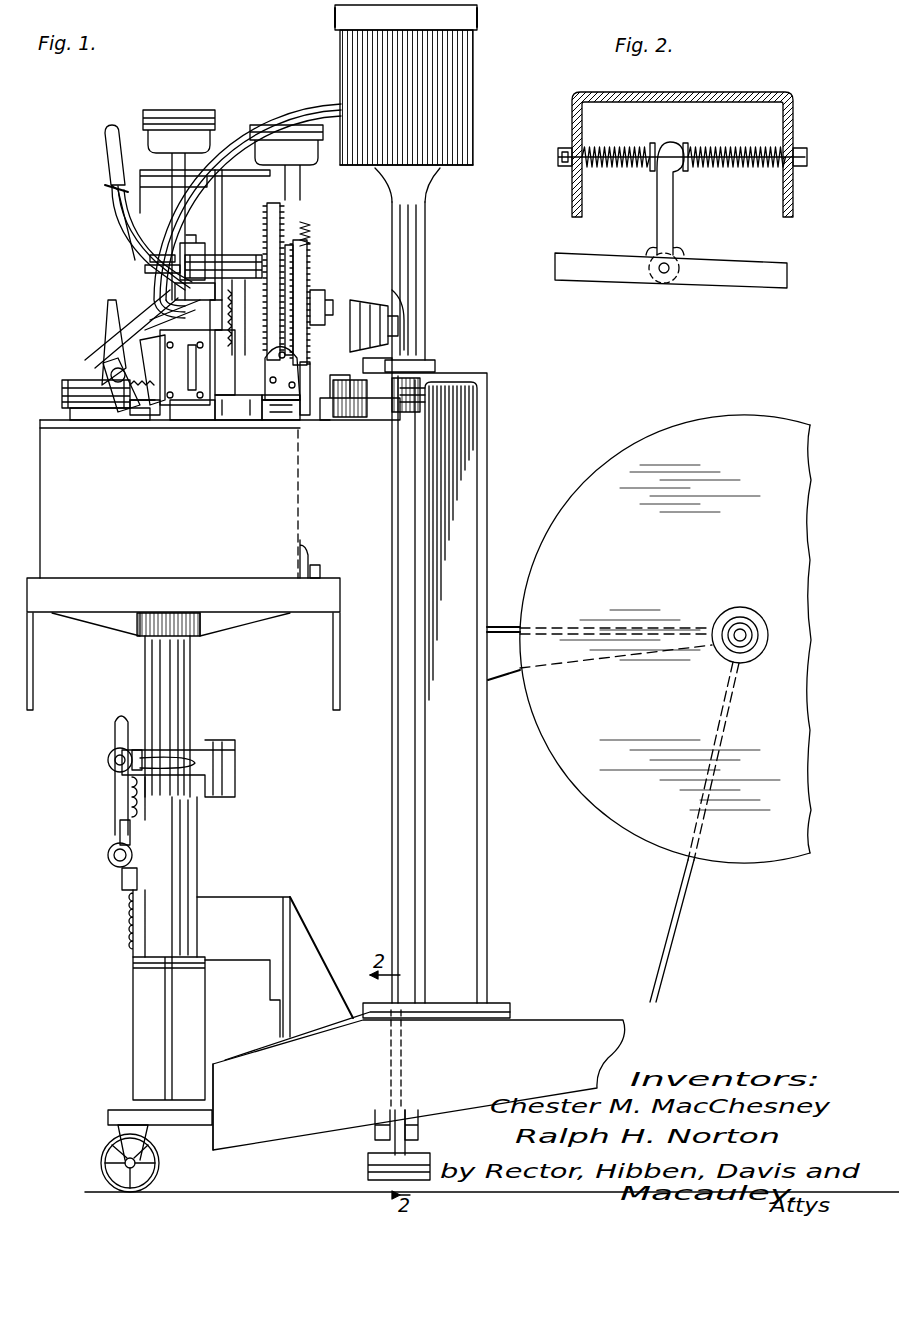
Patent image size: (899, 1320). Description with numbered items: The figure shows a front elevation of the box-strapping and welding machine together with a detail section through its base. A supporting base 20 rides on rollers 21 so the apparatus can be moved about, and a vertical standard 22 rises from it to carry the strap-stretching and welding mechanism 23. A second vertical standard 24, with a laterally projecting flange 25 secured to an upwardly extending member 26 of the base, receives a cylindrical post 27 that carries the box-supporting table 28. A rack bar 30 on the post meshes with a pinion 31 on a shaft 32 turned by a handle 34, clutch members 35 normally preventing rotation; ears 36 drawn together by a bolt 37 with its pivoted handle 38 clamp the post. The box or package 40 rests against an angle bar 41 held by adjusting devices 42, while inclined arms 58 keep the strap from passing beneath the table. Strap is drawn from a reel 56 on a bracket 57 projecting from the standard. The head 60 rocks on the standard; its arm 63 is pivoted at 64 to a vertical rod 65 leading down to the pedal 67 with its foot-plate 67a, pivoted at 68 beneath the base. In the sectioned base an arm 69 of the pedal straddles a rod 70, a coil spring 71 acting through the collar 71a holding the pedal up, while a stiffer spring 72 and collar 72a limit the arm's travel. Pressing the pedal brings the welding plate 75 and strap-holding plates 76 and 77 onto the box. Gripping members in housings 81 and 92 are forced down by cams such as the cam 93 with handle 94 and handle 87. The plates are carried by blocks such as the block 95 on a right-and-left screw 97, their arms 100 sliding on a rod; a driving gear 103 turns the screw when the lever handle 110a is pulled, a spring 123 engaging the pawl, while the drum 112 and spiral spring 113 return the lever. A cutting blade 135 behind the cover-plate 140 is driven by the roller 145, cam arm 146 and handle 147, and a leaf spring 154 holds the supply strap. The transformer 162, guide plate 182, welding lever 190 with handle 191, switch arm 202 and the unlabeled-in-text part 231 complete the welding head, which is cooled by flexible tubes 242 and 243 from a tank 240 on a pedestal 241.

In FIG. 1, the supporting base 20 is at (577, 1020).
In FIG. 2, the supporting base 20 is at (612, 94).
In FIG. 1, the rollers 21 is at (160, 1170).
In FIG. 1, the vertical standard 22 is at (488, 834).
In FIG. 1, the strap-stretching and welding mechanism 23 is at (99, 236).
In FIG. 1, the vertical standard 24 is at (200, 870).
In FIG. 1, the laterally projecting flange 25 is at (276, 897).
In FIG. 1, the upwardly extending member 26 is at (303, 937).
In FIG. 1, the cylindrical post 27 is at (191, 700).
In FIG. 1, the box-supporting table 28 is at (120, 600).
In FIG. 1, the rack bar 30 is at (132, 913).
In FIG. 1, the pinion 31 is at (107, 855).
In FIG. 1, the shaft 32 is at (114, 870).
In FIG. 1, the handle 34 is at (115, 800).
In FIG. 1, the clutch members 35 is at (120, 832).
In FIG. 1, the ears 36 is at (110, 760).
In FIG. 1, the bolt 37 is at (112, 765).
In FIG. 1, the pivoted handle 38 is at (190, 757).
In FIG. 1, the box or package 40 is at (302, 525).
In FIG. 1, the angle bar 41 is at (308, 545).
In FIG. 1, the adjusting devices 42 is at (320, 566).
In FIG. 1, the reel 56 is at (723, 416).
In FIG. 1, the bracket 57 is at (507, 650).
In FIG. 1, the inclined arms 58 is at (35, 692).
In FIG. 1, the head 60 is at (240, 282).
In FIG. 1, the arm 63 is at (392, 322).
In FIG. 1, the pivotal connection 64 is at (403, 347).
In FIG. 1, the vertical rod 65 is at (400, 448).
In FIG. 1, the pedal 67 is at (388, 1142).
In FIG. 2, the pedal 67 is at (722, 266).
In FIG. 1, the foot-plate 67a is at (368, 1168).
In FIG. 1, the pedal pivot 68 is at (420, 1123).
In FIG. 2, the arm 69 is at (657, 214).
In FIG. 2, the rod 70 is at (557, 153).
In FIG. 2, the coil spring 71 is at (747, 167).
In FIG. 2, the collar 71a is at (688, 142).
In FIG. 2, the spring 72 is at (620, 166).
In FIG. 2, the collar 72a is at (653, 143).
In FIG. 1, the welding plate 75 is at (205, 418).
In FIG. 1, the strap-holding plate 76 is at (273, 427).
In FIG. 1, the strap-holding plate 77 is at (130, 423).
In FIG. 1, the housing 81 is at (296, 412).
In FIG. 1, the operating handle 87 is at (312, 337).
In FIG. 1, the housing 92 is at (112, 400).
In FIG. 1, the pivoted cam 93 is at (110, 372).
In FIG. 1, the operating handle 94 is at (110, 330).
In FIG. 1, the block 95 is at (320, 405).
In FIG. 1, the screw 97 is at (135, 418).
In FIG. 1, the projecting arms 100 is at (488, 387).
In FIG. 1, the driving gear 103 is at (262, 208).
In FIG. 1, the handle 110a is at (267, 128).
In FIG. 1, the hub or drum 112 is at (306, 300).
In FIG. 1, the spiral spring 113 is at (312, 305).
In FIG. 1, the coil spring 123 is at (304, 238).
In FIG. 1, the cutting blade 135 is at (205, 395).
In FIG. 1, the cover-plate 140 is at (215, 395).
In FIG. 1, the roller 145 is at (153, 267).
In FIG. 1, the cam arm 146 is at (150, 257).
In FIG. 1, the handle 147 is at (117, 200).
In FIG. 1, the leaf spring 154 is at (293, 377).
In FIG. 1, the electric transformer 162 is at (143, 185).
In FIG. 1, the plate 182 is at (157, 297).
In FIG. 1, the lever 190 is at (160, 213).
In FIG. 1, the handle 191 is at (173, 110).
In FIG. 1, the arm 202 is at (234, 290).
In FIG. 1, the valve body 231 is at (190, 250).
In FIG. 1, the tank 240 is at (479, 99).
In FIG. 1, the pedestal 241 is at (423, 225).
In FIG. 1, the flexible tube 242 is at (298, 112).
In FIG. 1, the flexible tube 243 is at (323, 117).